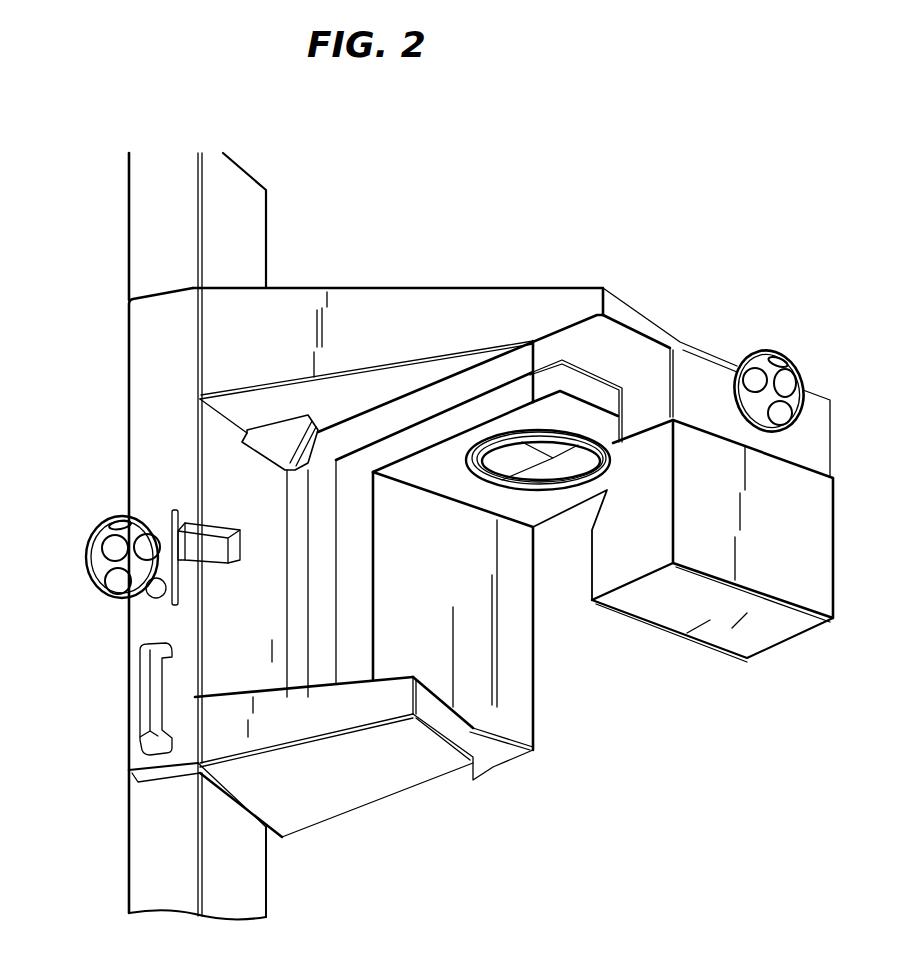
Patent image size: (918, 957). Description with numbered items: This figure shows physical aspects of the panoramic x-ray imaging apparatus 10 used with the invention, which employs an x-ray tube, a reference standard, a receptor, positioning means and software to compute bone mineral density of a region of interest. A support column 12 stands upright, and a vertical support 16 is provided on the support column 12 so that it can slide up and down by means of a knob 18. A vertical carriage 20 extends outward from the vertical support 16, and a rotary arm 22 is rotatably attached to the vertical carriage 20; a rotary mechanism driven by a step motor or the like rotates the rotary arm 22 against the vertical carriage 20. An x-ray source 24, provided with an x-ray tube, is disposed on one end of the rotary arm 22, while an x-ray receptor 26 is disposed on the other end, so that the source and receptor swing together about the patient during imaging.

The panoramic x-ray imaging apparatus 10 is at (608, 794).
The support column 12 is at (147, 832).
The vertical support 16 is at (147, 376).
The knob 18 is at (97, 522).
The vertical carriage 20 is at (485, 288).
The rotary arm 22 is at (420, 408).
The x-ray source 24 is at (597, 602).
The x-ray receptor 26 is at (353, 668).